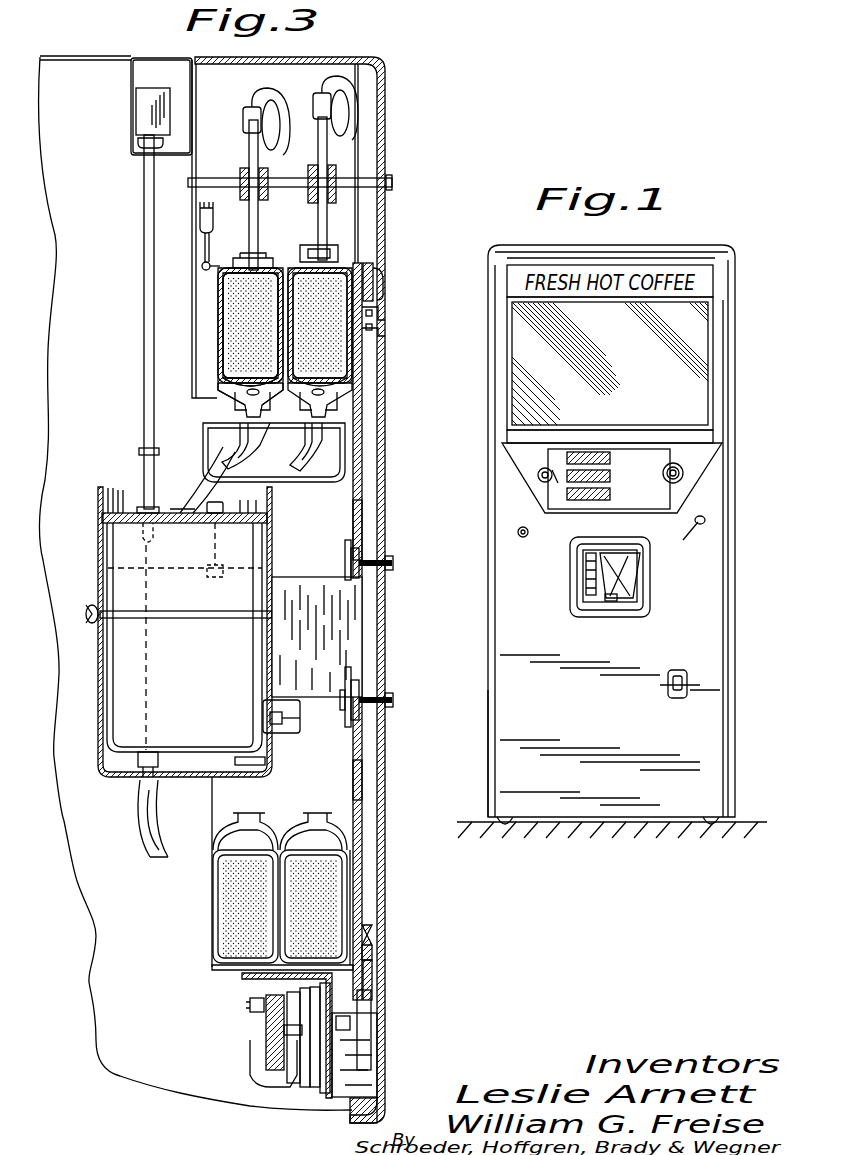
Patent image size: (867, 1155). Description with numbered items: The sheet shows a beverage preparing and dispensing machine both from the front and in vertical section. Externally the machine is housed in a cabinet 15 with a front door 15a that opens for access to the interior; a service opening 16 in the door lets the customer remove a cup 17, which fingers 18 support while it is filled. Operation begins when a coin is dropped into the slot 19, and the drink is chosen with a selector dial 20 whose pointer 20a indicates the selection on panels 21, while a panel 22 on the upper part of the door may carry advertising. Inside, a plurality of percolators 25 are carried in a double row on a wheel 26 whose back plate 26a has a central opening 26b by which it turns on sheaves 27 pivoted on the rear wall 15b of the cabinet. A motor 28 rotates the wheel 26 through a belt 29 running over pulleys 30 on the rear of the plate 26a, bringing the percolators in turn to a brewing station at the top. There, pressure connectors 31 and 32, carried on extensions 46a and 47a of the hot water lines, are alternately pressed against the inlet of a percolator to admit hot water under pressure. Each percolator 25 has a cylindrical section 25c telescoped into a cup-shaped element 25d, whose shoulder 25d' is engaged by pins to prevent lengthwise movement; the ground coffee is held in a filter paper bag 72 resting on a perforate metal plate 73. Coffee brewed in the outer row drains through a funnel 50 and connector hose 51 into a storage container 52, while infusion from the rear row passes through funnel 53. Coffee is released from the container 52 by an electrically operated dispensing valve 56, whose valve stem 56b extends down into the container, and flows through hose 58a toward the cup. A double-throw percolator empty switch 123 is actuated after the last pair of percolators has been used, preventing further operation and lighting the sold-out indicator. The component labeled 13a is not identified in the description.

In FIG. 1, the cabinet 15 is at (722, 742).
In FIG. 1, the front door 15a is at (515, 722).
In FIG. 3, the rear wall 15b is at (378, 886).
In FIG. 1, the service opening 16 is at (612, 601).
In FIG. 1, the cup 17 is at (612, 586).
In FIG. 1, the fingers 18 is at (590, 576).
In FIG. 1, the slot 19 is at (690, 471).
In FIG. 1, the selector dial 20 is at (538, 474).
In FIG. 1, the pointer 20a is at (550, 479).
In FIG. 1, the panels 21 is at (595, 462).
In FIG. 1, the panel 22 is at (622, 352).
In FIG. 3, the percolators 25 is at (315, 840).
In FIG. 3, the percolator section 25c is at (222, 311).
In FIG. 3, the cup-shaped element 25d is at (189, 382).
In FIG. 3, the shoulder 25d' is at (184, 390).
In FIG. 3, the wheel 26 is at (366, 827).
In FIG. 3, the back plate 26a is at (360, 778).
In FIG. 3, the central opening 26b is at (370, 531).
In FIG. 3, the sheaves 27 is at (362, 551).
In FIG. 3, the motor 28 is at (268, 1030).
In FIG. 3, the belt 29 is at (370, 270).
In FIG. 3, the pulleys 30 is at (370, 281).
In FIG. 3, the pressure connector 31 is at (243, 262).
In FIG. 3, the pressure connector 32 is at (302, 251).
In FIG. 3, the extension 46a is at (243, 160).
In FIG. 3, the extension 47a is at (330, 160).
In FIG. 3, the funnel 50 is at (234, 445).
In FIG. 3, the connector hose 51 is at (188, 478).
In FIG. 3, the storage container 52 is at (108, 549).
In FIG. 3, the funnel 53 is at (292, 449).
In FIG. 3, the dispensing valve 56 is at (148, 115).
In FIG. 3, the valve stem 56b is at (145, 455).
In FIG. 3, the hose 58a is at (148, 829).
In FIG. 3, the bag 72 is at (232, 341).
In FIG. 3, the perforate metal plate 73 is at (218, 403).
In FIG. 3, the percolator empty switch 123 is at (206, 200).
In FIG. 3, the tank fitting 13a is at (224, 506).